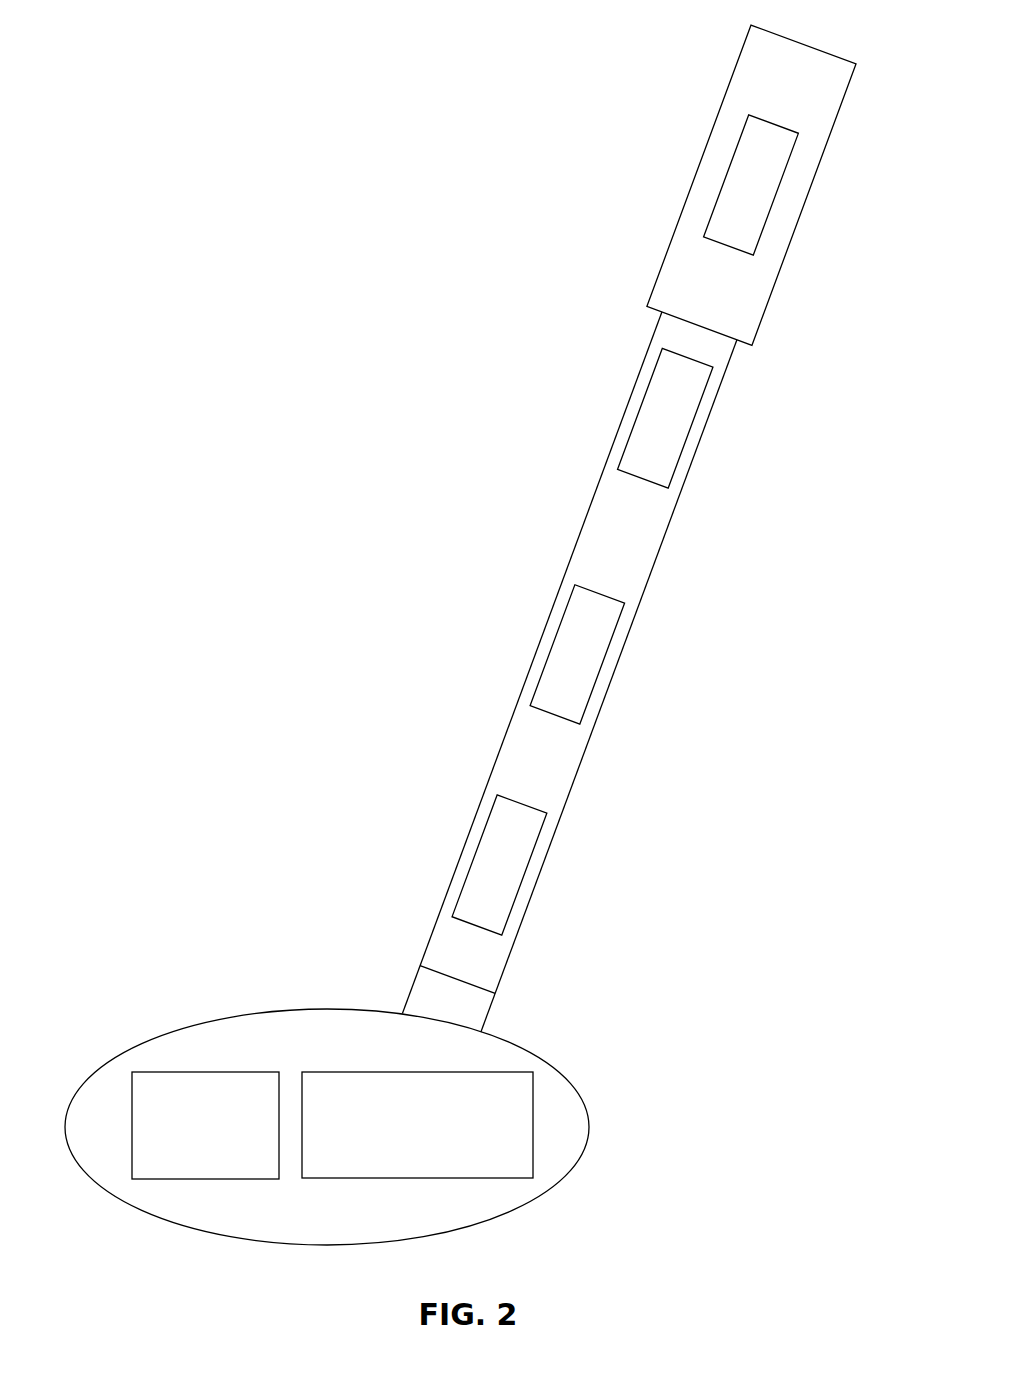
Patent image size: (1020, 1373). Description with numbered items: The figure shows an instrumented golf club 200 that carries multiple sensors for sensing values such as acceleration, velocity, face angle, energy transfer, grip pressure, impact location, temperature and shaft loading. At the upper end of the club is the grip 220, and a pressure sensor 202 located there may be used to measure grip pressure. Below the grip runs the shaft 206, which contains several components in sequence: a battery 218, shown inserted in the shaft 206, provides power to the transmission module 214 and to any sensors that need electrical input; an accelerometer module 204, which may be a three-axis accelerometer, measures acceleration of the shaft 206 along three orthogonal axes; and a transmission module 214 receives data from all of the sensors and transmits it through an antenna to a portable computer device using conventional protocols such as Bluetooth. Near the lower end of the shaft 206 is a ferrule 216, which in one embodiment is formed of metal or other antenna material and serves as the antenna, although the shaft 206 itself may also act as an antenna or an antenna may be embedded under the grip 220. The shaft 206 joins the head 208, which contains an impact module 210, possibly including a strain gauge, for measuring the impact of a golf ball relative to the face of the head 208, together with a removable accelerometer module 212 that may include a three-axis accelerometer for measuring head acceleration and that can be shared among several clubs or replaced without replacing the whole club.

The instrumented golf club 200 is at (322, 105).
The pressure sensor 202 is at (722, 185).
The accelerometer module 204 is at (598, 673).
The shaft 206 is at (642, 557).
The head 208 is at (220, 1030).
The impact module 210 is at (218, 1179).
The removable accelerometer module 212 is at (377, 1178).
The transmission module 214 is at (523, 878).
The ferrule 216 is at (420, 992).
The battery 218 is at (690, 425).
The grip 220 is at (753, 65).